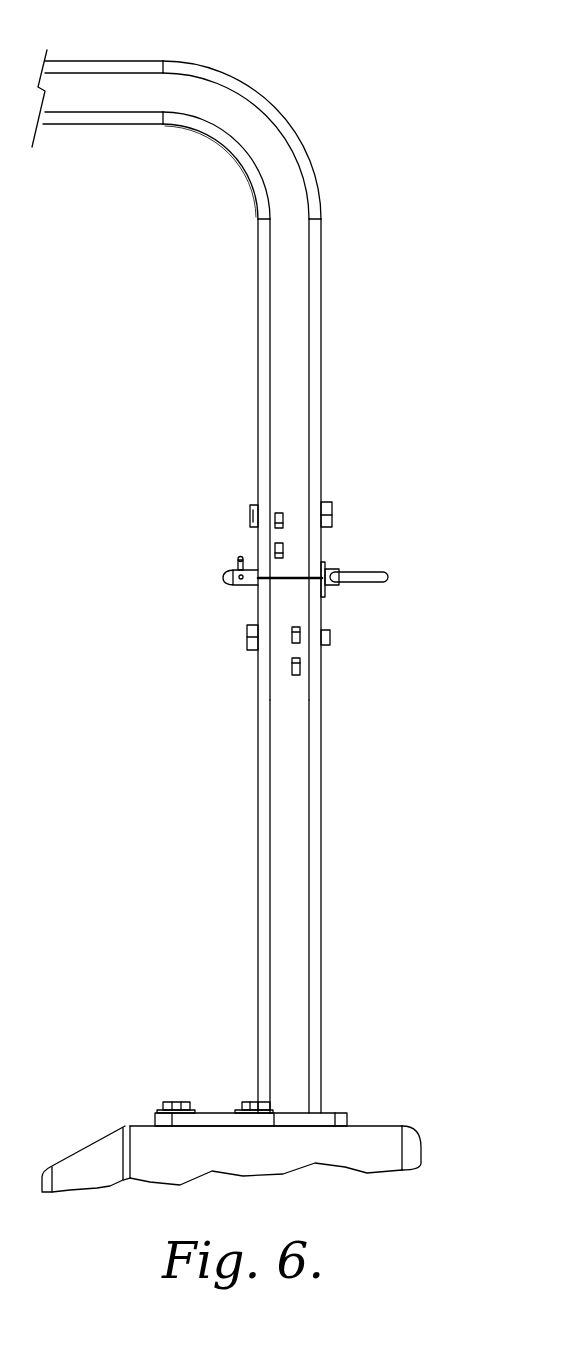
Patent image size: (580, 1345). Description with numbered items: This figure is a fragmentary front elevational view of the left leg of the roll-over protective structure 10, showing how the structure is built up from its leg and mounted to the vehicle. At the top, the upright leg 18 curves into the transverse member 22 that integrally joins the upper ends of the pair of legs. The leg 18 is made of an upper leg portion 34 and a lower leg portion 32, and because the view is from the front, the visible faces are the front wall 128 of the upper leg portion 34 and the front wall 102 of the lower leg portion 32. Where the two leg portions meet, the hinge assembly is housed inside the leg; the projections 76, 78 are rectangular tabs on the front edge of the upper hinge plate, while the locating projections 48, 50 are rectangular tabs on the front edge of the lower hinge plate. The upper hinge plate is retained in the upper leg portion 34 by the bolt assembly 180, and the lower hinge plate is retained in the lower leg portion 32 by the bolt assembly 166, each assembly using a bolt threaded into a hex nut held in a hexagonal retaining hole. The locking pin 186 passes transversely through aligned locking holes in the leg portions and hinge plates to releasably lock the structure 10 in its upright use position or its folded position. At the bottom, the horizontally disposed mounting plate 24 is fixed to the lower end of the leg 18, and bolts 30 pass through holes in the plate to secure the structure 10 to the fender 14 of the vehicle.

The roll-over protective structure 10 is at (320, 98).
The transverse member 22 is at (114, 49).
The upright leg 18 is at (330, 232).
The upper leg portion 34 is at (320, 300).
The front wall 128 is at (293, 365).
The front wall 102 is at (292, 843).
The lower leg portion 32 is at (318, 953).
The projection 78 is at (278, 514).
The projection 76 is at (276, 548).
The bolt assembly 180 is at (325, 510).
The locking pin 186 is at (368, 575).
The bolt assembly 166 is at (250, 642).
The locating projection 50 is at (298, 633).
The locating projection 48 is at (300, 668).
The mounting plate 24 is at (222, 1118).
The bolt 30 is at (172, 1103).
The fender 14 is at (353, 1135).